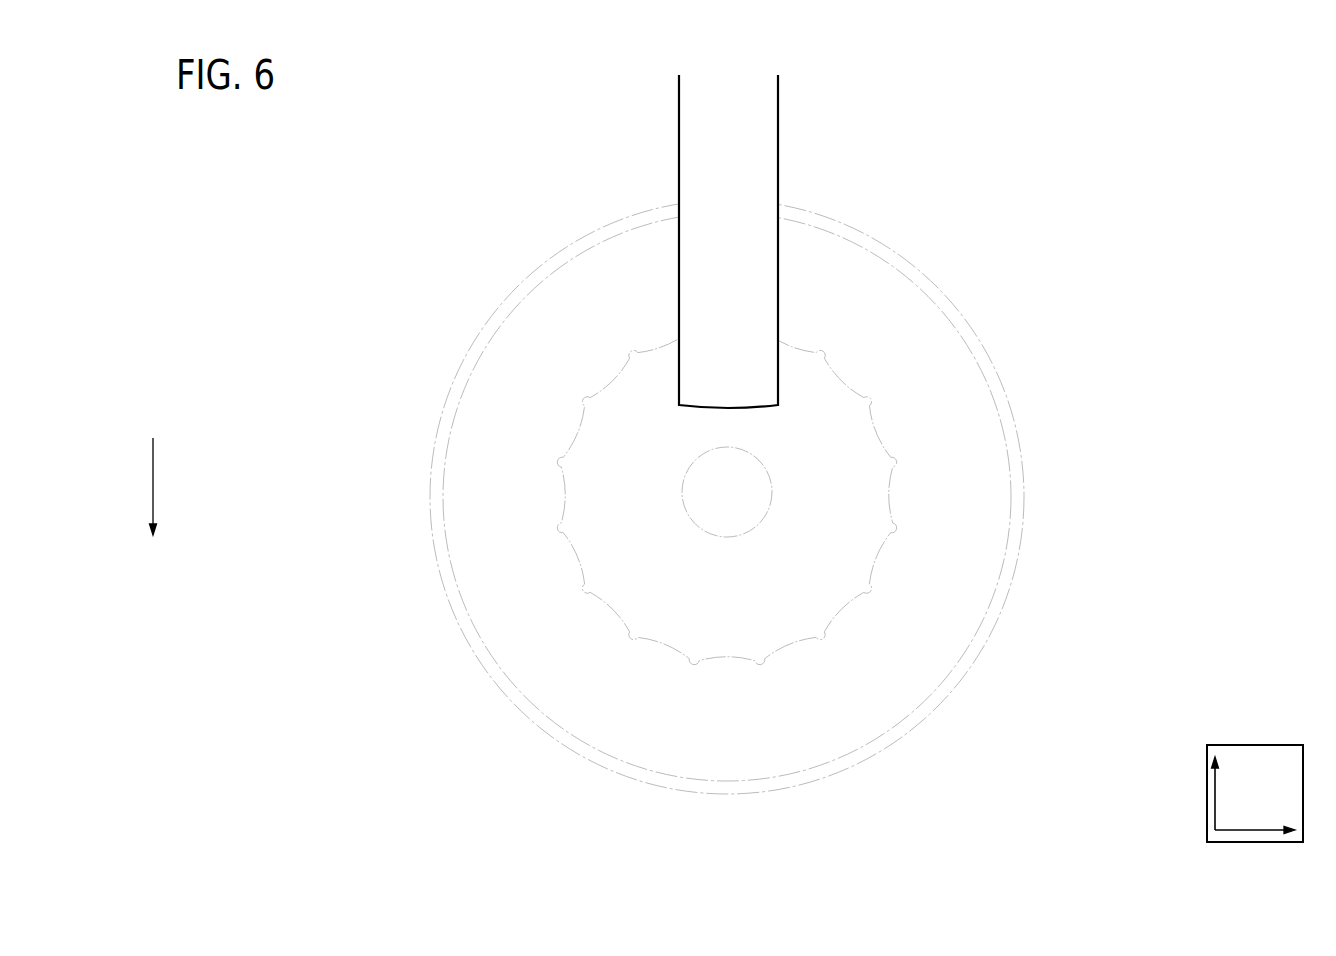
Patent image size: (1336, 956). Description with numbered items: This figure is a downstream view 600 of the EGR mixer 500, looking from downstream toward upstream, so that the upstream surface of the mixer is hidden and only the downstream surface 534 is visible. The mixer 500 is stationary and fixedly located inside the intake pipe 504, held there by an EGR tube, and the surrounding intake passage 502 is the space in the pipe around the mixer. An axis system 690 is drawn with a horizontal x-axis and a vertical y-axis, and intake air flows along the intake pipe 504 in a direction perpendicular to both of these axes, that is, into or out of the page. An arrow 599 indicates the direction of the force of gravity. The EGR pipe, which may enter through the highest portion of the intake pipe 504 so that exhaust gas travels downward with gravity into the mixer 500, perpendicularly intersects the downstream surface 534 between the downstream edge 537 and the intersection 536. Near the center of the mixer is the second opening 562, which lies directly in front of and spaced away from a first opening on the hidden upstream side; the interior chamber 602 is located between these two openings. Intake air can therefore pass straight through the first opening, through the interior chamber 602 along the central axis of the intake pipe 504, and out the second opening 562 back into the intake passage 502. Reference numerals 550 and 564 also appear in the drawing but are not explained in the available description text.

The mixer 500 is at (808, 275).
The intake passage 502 is at (510, 632).
The intake pipe 504 is at (992, 362).
The downstream surface 534 is at (651, 523).
The intersection 536 is at (626, 650).
The downstream edge 537 is at (768, 468).
The base 550 is at (759, 741).
The second opening 562 is at (753, 522).
The scallop recess 564 is at (668, 632).
The arrow 599 is at (153, 487).
The downstream view 600 is at (303, 136).
The interior chamber 602 is at (744, 503).
The axis system 690 is at (1268, 745).